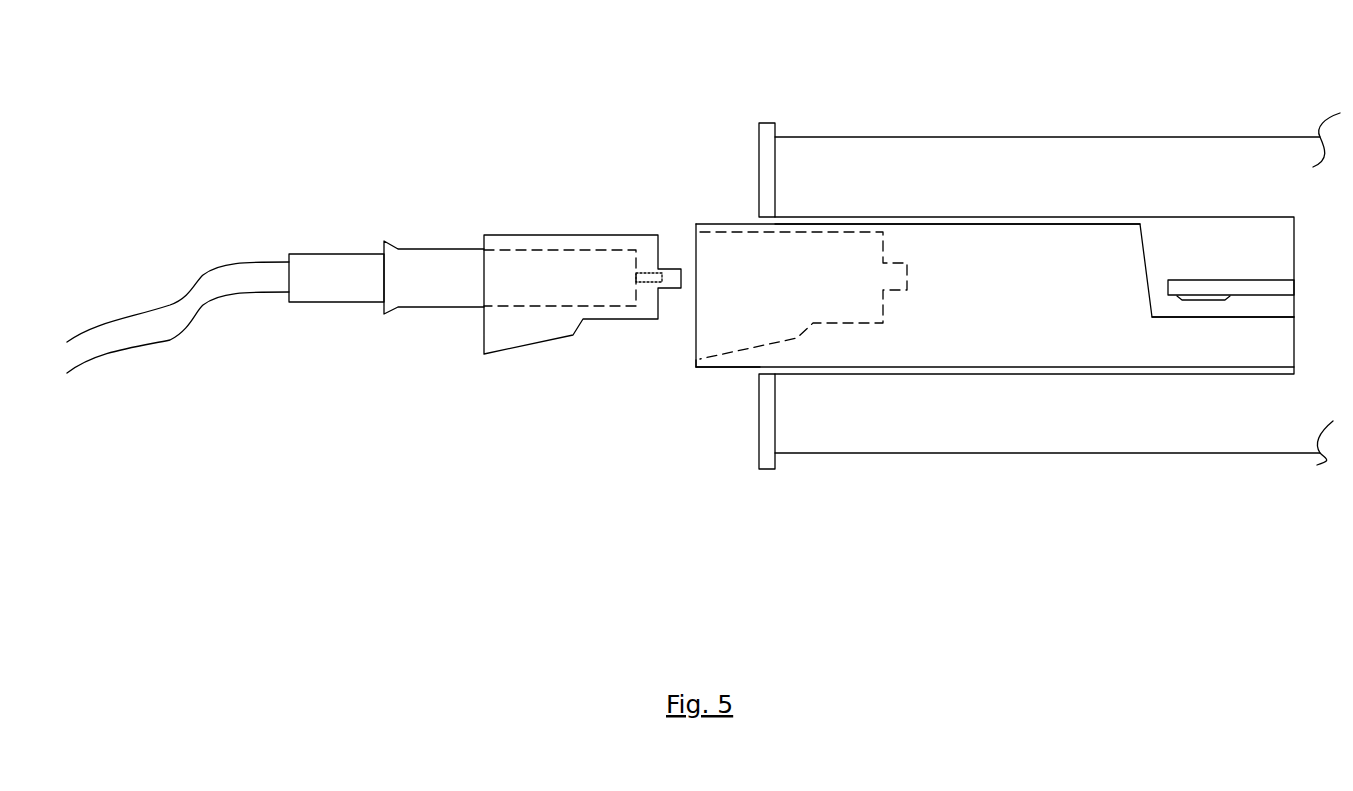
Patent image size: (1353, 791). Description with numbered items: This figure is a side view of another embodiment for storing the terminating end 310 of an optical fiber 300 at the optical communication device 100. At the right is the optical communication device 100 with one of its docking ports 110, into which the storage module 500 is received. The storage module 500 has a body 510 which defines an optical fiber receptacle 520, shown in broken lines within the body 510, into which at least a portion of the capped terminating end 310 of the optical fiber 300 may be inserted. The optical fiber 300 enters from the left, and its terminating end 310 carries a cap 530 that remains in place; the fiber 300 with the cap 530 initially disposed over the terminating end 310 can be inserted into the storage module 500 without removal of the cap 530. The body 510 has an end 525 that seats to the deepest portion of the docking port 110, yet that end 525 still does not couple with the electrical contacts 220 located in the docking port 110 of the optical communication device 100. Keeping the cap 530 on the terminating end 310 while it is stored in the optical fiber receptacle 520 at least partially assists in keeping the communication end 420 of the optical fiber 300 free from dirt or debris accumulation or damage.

The optical communication device 100 is at (988, 78).
The docking port 110 is at (848, 217).
The electrical contacts 220 is at (1185, 295).
The optical fiber 300 is at (180, 228).
The terminating end 310 is at (326, 328).
The communication end 420 is at (650, 285).
The storage module 500 is at (722, 190).
The body 510 is at (733, 367).
The optical fiber receptacle 520 is at (732, 232).
The end 525 is at (1292, 341).
The cap 530 is at (517, 345).